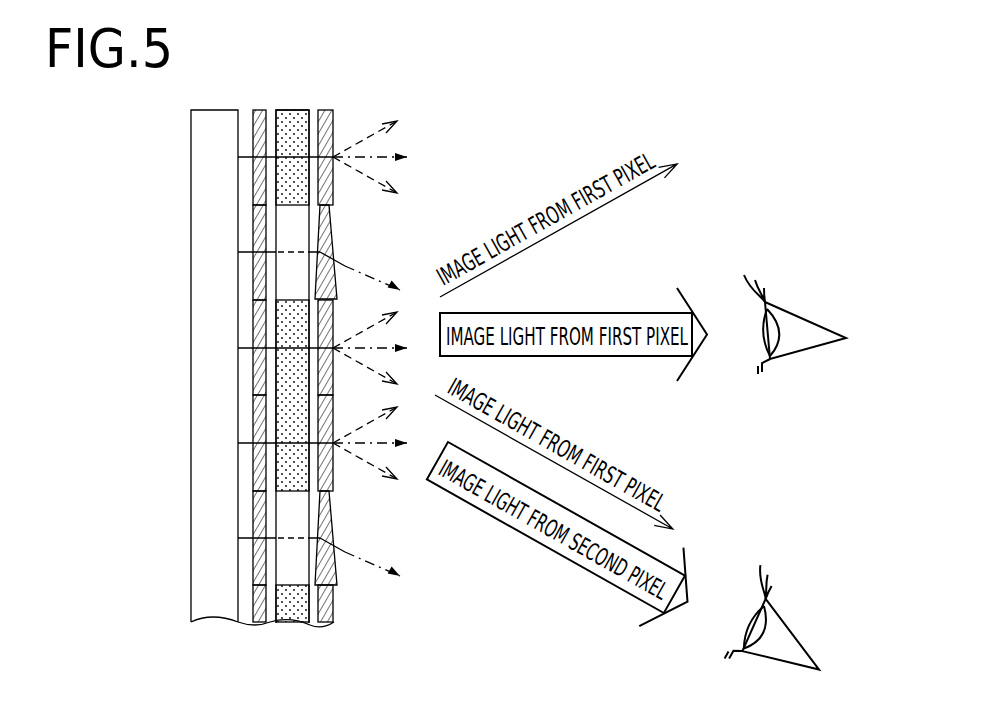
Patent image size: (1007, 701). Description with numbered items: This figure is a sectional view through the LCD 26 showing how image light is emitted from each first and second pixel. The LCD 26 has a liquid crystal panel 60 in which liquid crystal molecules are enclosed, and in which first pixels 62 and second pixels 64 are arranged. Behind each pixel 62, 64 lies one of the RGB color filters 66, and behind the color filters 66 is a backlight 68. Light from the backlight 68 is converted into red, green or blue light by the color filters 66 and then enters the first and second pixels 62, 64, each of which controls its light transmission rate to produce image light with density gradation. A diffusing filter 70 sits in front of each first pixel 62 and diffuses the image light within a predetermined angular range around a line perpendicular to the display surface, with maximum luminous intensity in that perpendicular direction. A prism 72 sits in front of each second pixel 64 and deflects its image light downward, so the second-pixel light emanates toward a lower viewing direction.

The LCD 26 is at (417, 79).
The liquid crystal panel 60 is at (301, 98).
The first pixel 62 is at (285, 110).
The second pixel 64 is at (321, 219).
The RGB color filter 66 is at (254, 124).
The backlight 68 is at (206, 110).
The diffusing filter 70 is at (334, 117).
The prism 72 is at (338, 245).